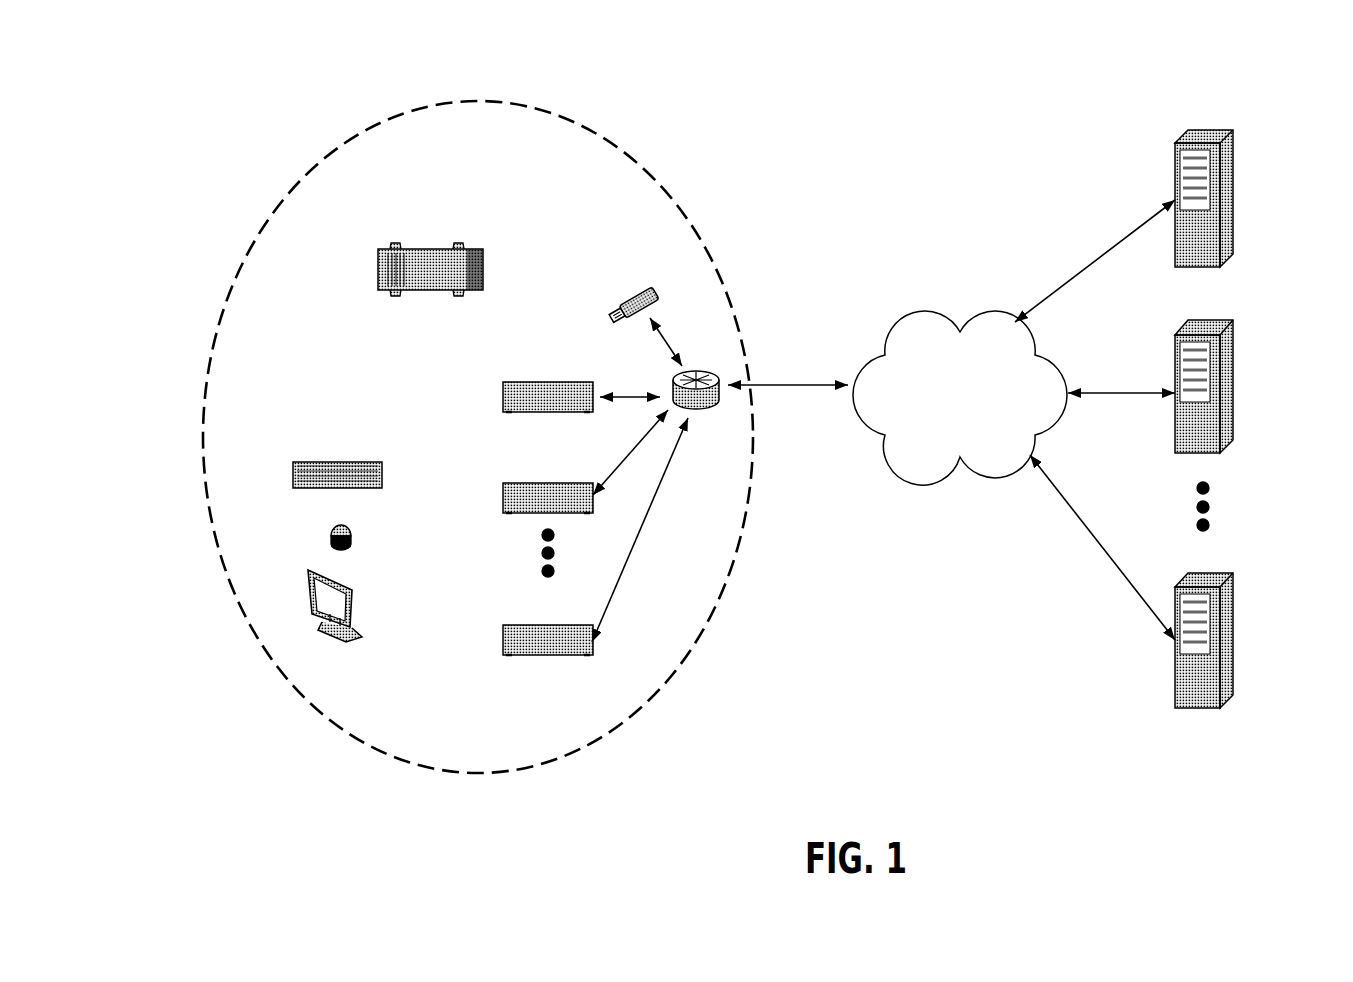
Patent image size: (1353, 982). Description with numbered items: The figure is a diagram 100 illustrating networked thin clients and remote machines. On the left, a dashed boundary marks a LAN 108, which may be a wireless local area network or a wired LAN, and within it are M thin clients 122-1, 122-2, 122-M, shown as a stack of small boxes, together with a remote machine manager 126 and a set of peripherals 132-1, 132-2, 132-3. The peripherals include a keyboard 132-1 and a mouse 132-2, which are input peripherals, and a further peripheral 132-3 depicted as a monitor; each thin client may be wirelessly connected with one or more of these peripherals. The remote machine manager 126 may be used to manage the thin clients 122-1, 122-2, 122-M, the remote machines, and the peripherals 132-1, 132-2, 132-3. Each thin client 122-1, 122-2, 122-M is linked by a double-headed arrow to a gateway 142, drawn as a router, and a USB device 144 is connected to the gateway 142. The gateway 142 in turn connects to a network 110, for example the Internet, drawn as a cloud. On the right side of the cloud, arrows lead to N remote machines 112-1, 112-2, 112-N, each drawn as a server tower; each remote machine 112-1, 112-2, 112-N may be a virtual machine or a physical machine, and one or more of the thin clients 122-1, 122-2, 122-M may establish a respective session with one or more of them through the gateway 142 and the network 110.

The diagram 100 is at (168, 86).
The LAN 108 is at (640, 157).
The network 110 is at (940, 316).
The remote machine 112-1 is at (1236, 167).
The remote machine 112-2 is at (1236, 376).
The remote machine 112-N is at (1233, 638).
The thin client 122-1 is at (535, 382).
The thin client 122-2 is at (535, 483).
The thin client 122-M is at (540, 613).
The remote machine manager 126 is at (484, 270).
The keyboard 132-1 is at (383, 472).
The mouse 132-2 is at (352, 537).
The peripheral 132-3 is at (358, 605).
The gateway 142 is at (693, 371).
The USB device 144 is at (662, 295).